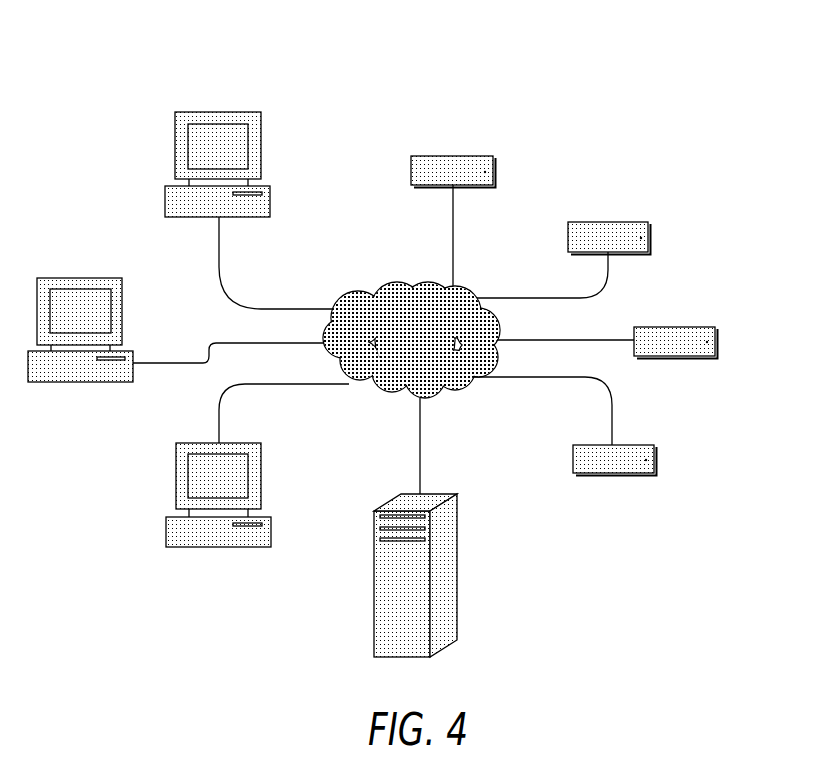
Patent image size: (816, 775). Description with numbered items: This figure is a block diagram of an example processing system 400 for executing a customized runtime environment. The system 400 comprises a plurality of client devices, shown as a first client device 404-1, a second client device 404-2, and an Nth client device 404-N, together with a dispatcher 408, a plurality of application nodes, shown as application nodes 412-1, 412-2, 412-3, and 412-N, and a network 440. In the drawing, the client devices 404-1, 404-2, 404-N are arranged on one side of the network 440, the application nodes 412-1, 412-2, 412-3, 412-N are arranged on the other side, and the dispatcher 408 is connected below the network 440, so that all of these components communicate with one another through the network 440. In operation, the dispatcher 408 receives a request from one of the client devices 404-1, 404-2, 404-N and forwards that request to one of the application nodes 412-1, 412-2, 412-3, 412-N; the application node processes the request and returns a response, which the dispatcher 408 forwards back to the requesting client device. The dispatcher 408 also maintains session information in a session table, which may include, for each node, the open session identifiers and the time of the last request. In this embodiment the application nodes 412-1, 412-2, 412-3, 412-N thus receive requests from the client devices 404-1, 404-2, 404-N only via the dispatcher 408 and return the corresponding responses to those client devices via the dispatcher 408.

The processing system 400 is at (560, 50).
The client device 404-1 is at (248, 217).
The client device 404-2 is at (110, 382).
The client device 404-N is at (227, 547).
The application node 412-1 is at (468, 185).
The application node 412-2 is at (625, 252).
The application node 412-3 is at (690, 356).
The application node 412-N is at (630, 473).
The dispatcher 408 is at (457, 520).
The network 440 is at (465, 385).